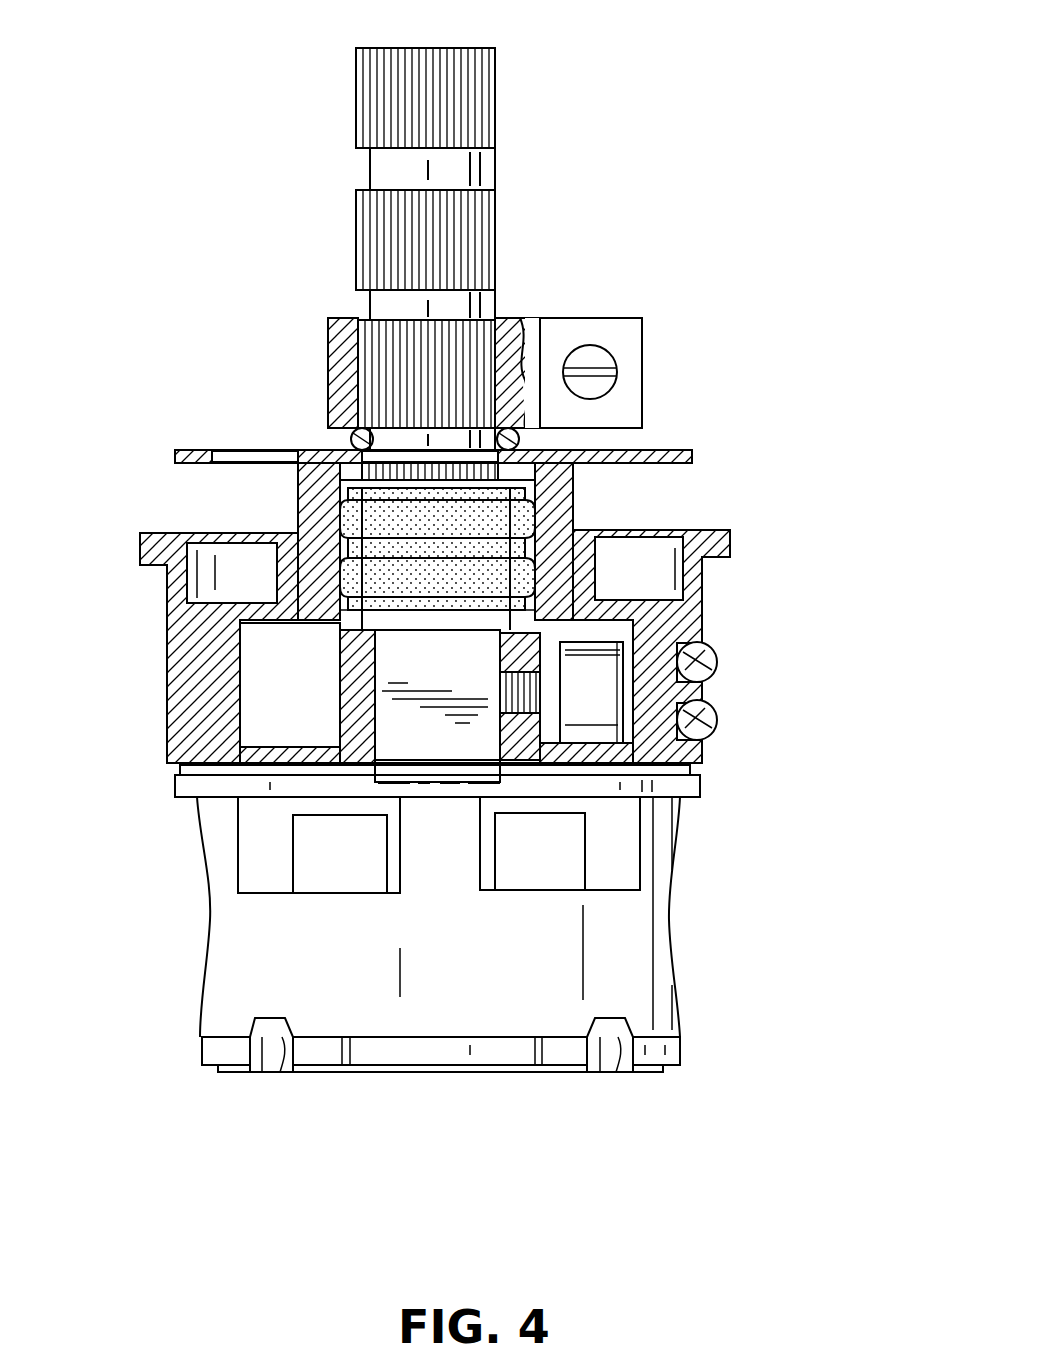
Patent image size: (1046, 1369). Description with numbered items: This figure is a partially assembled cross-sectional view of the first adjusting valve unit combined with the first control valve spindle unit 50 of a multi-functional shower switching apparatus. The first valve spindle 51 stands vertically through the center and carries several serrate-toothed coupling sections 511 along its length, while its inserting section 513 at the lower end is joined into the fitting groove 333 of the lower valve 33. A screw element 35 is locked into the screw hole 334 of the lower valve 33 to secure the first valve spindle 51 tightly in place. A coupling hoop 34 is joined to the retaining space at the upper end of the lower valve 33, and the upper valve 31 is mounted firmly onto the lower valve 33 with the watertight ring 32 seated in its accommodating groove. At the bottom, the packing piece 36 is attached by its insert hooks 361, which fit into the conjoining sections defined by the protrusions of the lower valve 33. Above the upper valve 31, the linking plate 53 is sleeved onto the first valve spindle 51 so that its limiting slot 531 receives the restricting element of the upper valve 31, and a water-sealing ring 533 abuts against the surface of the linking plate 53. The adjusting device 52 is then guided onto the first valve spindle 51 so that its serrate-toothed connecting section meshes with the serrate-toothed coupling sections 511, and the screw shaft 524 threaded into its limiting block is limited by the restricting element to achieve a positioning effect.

The upper valve 31 is at (448, 629).
The watertight ring 32 is at (300, 462).
The lower valve 33 is at (687, 875).
The coupling hoop 34 is at (690, 768).
The screw element 35 is at (678, 696).
The screw hole 334 is at (542, 690).
The packing piece 36 is at (441, 1098).
The first control valve spindle unit 50 is at (552, 195).
The first valve spindle 51 is at (422, 240).
The adjusting device 52 is at (537, 353).
The linking plate 53 is at (439, 382).
The fitting groove 333 is at (600, 648).
The insert hooks 361 is at (278, 1055).
The serrate-toothed coupling sections 511 is at (478, 103).
The inserting section 513 is at (440, 752).
The screw shaft 524 is at (615, 352).
The limiting slot 531 is at (237, 453).
The water-sealing ring 533 is at (340, 437).